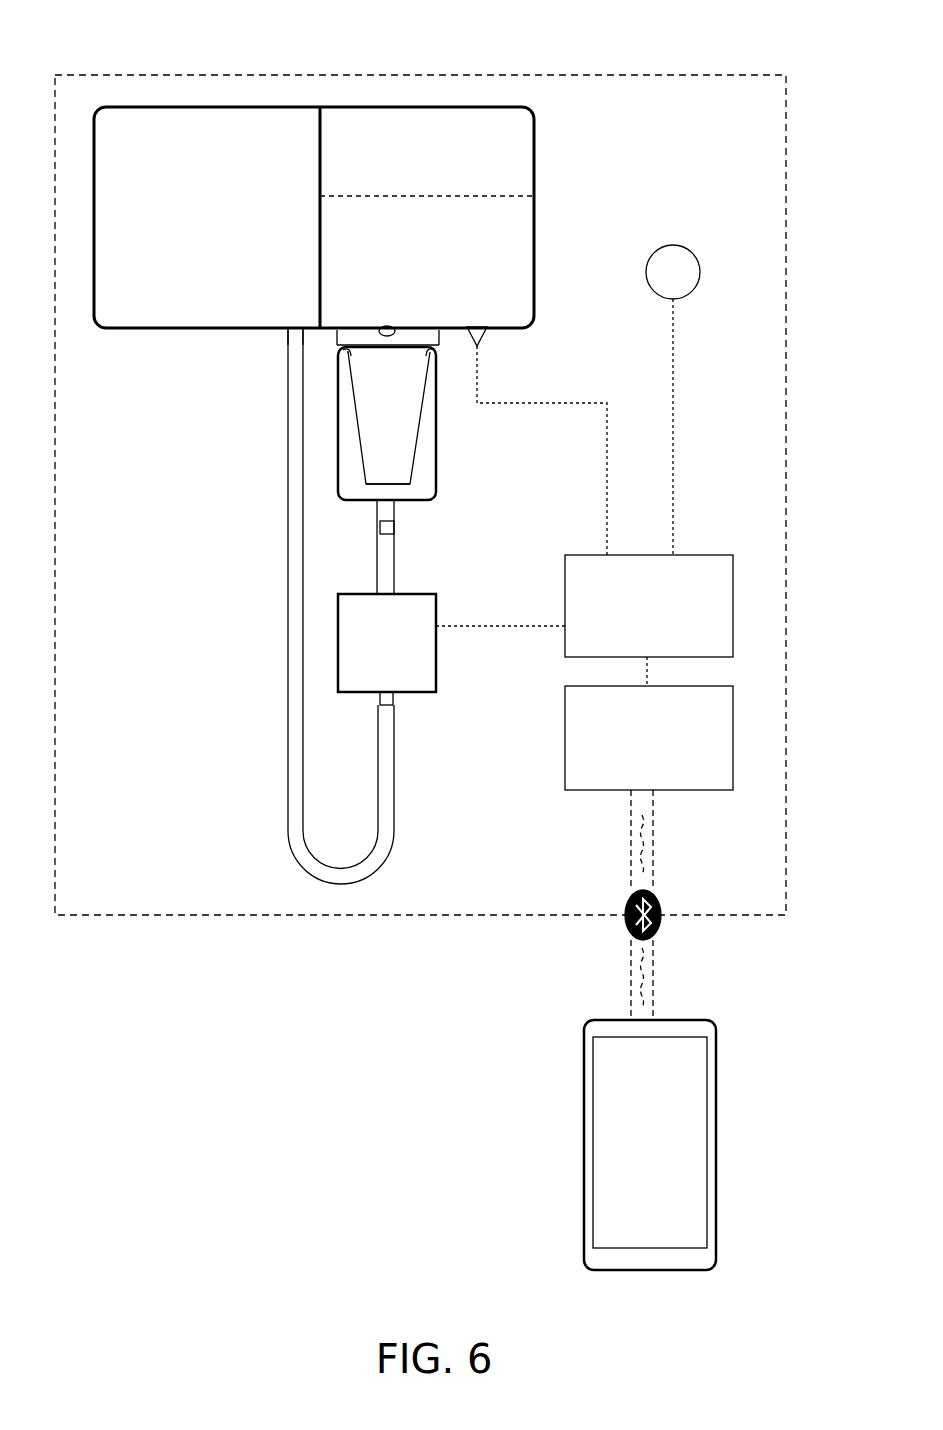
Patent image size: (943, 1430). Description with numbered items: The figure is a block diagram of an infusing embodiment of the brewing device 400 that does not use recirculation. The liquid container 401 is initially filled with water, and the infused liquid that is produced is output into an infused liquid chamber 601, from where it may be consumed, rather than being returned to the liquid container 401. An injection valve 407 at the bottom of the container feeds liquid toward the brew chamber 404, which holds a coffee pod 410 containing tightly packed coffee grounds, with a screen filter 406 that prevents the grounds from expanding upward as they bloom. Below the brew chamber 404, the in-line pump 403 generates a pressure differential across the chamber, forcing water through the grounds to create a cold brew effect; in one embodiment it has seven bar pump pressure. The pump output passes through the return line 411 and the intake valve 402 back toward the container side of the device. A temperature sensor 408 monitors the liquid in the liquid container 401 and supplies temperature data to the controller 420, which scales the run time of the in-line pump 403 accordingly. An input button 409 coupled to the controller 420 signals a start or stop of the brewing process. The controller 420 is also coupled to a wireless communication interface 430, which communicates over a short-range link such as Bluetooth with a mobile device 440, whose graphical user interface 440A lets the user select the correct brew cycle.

The brewing device 400 is at (143, 93).
The liquid container 401 is at (518, 168).
The infused liquid chamber 601 is at (178, 137).
The intake valve 402 is at (282, 340).
The in-line pump 403 is at (362, 650).
The brew chamber 404 is at (340, 500).
The screen filter 406 is at (333, 350).
The injection valve 407 is at (397, 329).
The temperature sensor 408 is at (487, 333).
The input button 409 is at (665, 259).
The coffee pod 410 is at (360, 456).
The return line 411 is at (289, 804).
The controller 420 is at (649, 620).
The wireless communication interface 430 is at (649, 853).
The mobile device 440 is at (584, 1138).
The graphical user interface 440A is at (683, 1143).